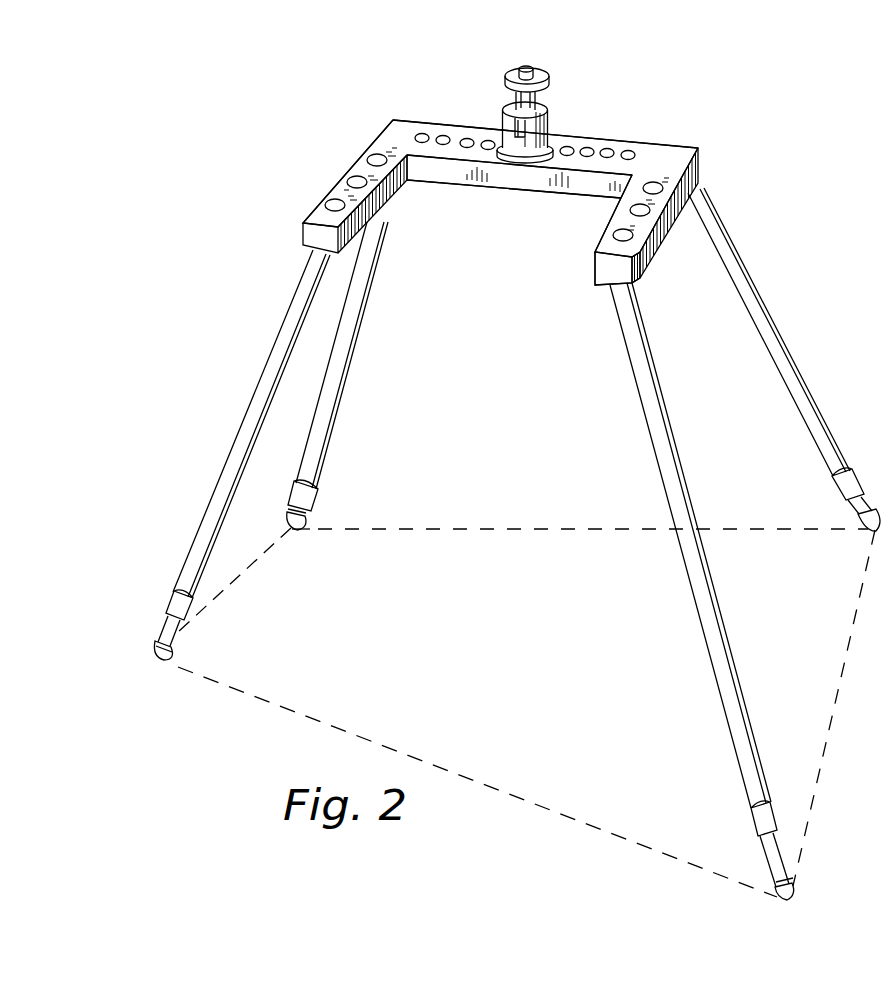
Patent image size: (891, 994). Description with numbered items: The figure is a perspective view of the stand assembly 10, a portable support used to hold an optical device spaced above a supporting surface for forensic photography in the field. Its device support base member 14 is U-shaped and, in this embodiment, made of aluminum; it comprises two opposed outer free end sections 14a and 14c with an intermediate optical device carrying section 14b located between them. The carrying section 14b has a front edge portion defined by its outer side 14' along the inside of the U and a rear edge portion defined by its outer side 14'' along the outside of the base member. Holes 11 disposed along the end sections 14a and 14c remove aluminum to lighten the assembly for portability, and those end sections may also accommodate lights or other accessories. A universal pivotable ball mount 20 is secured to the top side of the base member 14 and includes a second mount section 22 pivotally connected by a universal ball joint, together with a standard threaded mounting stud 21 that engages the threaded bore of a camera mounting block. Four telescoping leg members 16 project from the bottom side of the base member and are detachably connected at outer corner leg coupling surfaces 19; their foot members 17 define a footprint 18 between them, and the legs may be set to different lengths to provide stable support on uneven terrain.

The stand assembly 10 is at (700, 106).
The holes 11 is at (379, 156).
The base member 14 is at (516, 218).
The outer free end section 14a is at (655, 218).
The intermediate optical device carrying section 14b is at (502, 192).
The outer free end section 14c is at (311, 203).
The outer side 14' is at (543, 213).
The outer side 14'' is at (545, 115).
The leg members 16 is at (661, 461).
The foot members 17 is at (790, 886).
The footprint 18 is at (457, 528).
The outer corner leg coupling surfaces 19 is at (612, 286).
The universal pivotable ball mount 20 is at (560, 100).
The threaded mounting stud 21 is at (536, 71).
The second mount section 22 is at (493, 69).